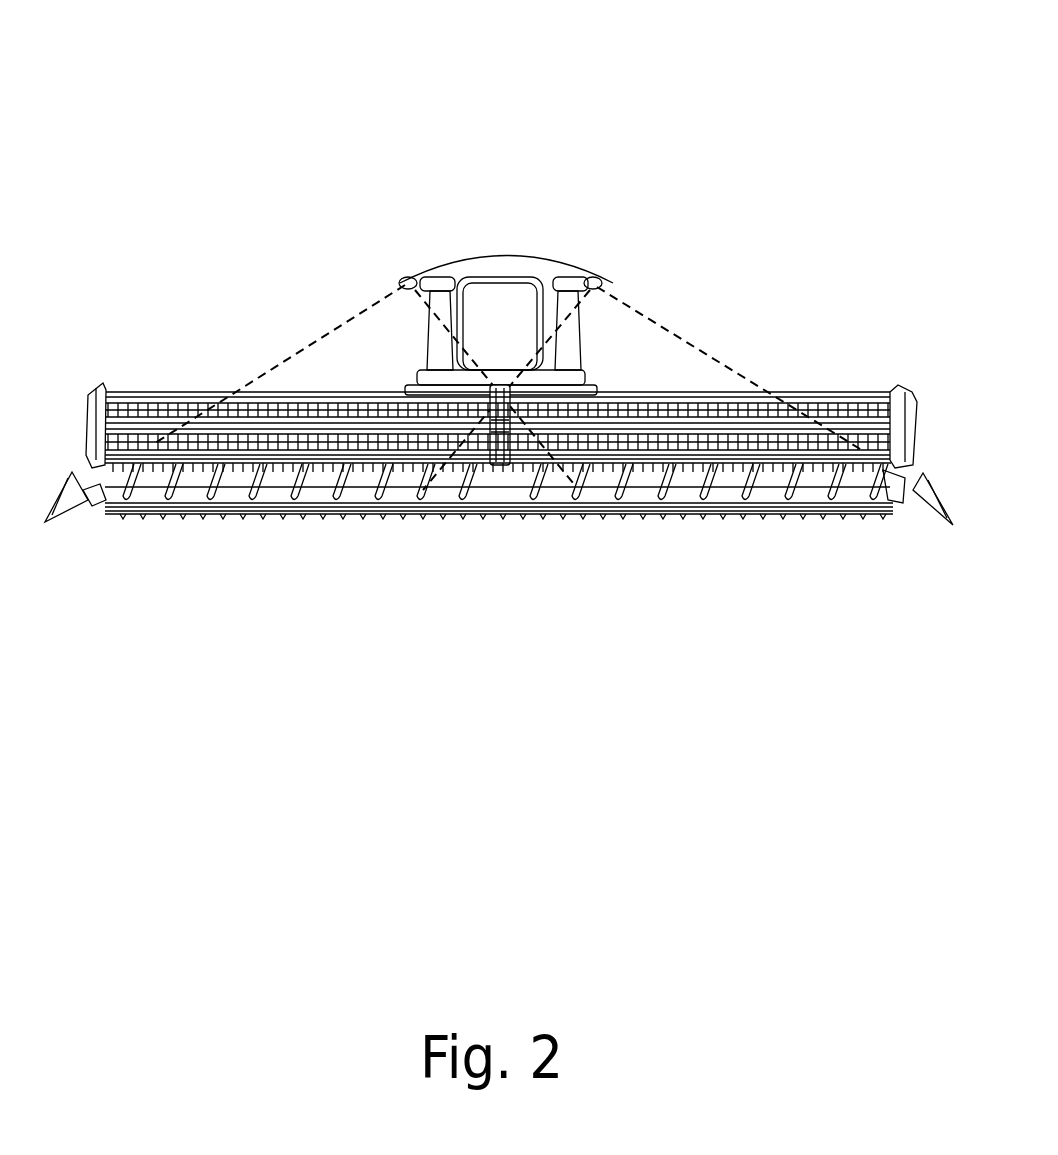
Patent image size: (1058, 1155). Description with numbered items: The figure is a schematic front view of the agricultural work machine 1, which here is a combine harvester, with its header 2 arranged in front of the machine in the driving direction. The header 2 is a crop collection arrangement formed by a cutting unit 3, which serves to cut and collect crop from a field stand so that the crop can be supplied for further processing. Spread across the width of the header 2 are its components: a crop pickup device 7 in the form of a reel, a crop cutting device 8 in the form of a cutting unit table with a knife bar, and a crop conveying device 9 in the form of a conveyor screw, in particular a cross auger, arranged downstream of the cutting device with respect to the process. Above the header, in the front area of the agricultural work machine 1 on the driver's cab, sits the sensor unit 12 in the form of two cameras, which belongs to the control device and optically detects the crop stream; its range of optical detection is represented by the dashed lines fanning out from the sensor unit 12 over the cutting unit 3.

The agricultural work machine 1 is at (715, 149).
The header 2 is at (805, 350).
The cutting unit 3 is at (498, 448).
The crop pickup device 7 is at (172, 392).
The crop cutting device 8 is at (388, 510).
The crop conveying device 9 is at (272, 500).
The sensor unit 12 is at (592, 283).